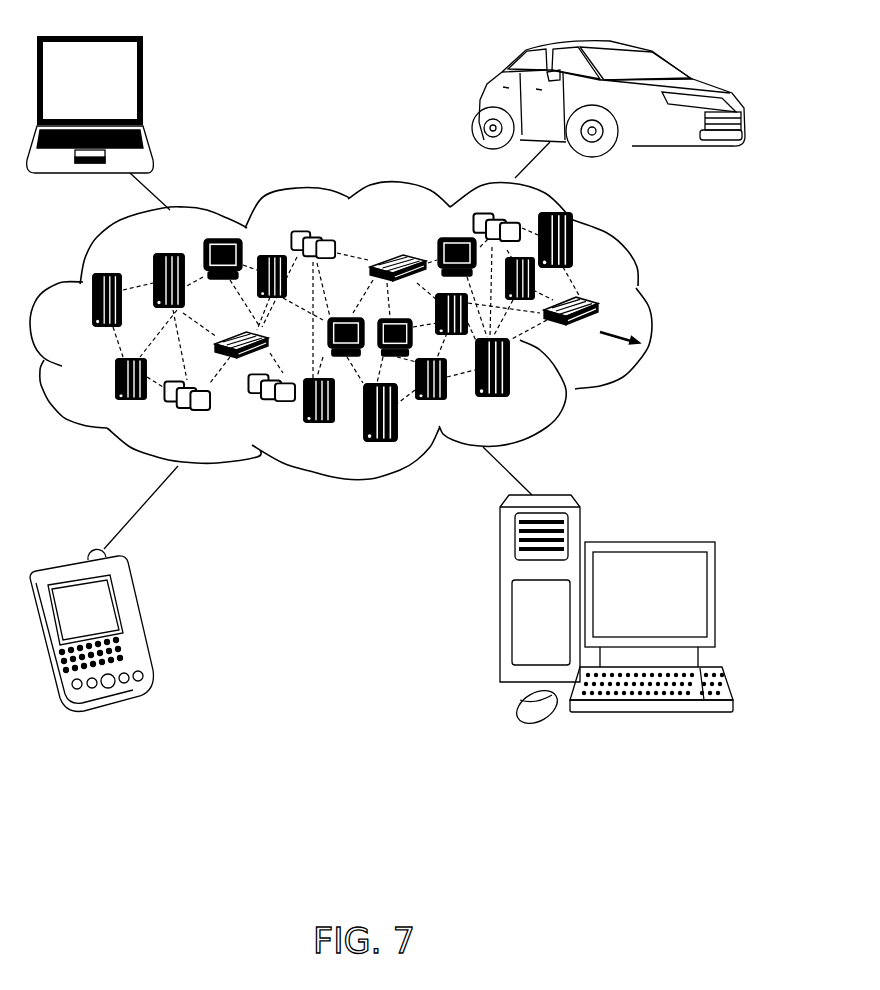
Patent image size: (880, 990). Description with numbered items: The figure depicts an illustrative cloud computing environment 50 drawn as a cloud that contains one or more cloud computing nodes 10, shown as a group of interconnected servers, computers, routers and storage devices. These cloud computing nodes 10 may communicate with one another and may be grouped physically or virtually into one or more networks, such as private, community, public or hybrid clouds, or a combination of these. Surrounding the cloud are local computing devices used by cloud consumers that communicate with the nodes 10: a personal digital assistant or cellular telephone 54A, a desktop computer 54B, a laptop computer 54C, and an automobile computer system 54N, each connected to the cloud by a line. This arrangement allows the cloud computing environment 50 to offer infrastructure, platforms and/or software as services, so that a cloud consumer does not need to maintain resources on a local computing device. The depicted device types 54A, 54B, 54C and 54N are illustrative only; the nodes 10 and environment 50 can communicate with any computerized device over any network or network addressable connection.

The cloud computing nodes 10 is at (634, 349).
The cloud computing environment 50 is at (648, 311).
The personal digital assistant (PDA) or cellular telephone 54A is at (135, 617).
The desktop computer 54B is at (647, 540).
The laptop computer 54C is at (143, 88).
The automobile computer system 54N is at (478, 101).